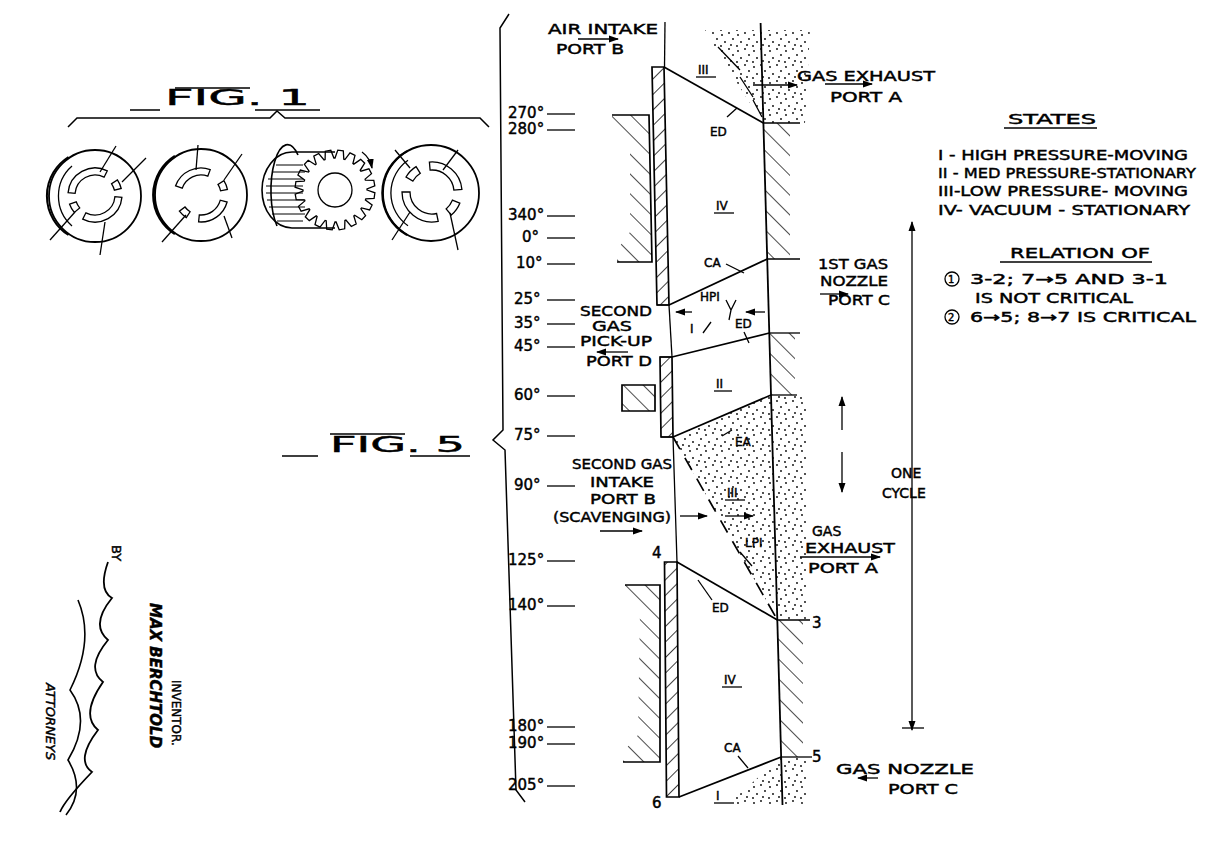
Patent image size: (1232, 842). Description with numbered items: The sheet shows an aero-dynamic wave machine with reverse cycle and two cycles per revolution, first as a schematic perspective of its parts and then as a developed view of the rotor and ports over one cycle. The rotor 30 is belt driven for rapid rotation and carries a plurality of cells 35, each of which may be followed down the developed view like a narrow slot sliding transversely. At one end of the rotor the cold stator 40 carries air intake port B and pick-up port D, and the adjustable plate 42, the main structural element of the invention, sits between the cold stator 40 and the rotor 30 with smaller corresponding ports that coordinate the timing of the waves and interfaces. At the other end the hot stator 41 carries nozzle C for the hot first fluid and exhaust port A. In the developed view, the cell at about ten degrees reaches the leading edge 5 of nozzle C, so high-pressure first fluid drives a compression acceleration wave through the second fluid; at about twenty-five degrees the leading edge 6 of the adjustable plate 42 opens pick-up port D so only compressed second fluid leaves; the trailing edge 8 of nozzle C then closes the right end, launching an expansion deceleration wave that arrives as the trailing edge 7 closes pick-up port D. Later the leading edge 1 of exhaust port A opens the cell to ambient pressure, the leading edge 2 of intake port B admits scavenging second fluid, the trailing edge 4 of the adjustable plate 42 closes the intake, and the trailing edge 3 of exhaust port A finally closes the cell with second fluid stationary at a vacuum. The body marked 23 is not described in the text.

In FIG. 1, the cold stator 40 is at (83, 241).
In FIG. 5, the cold stator 40 is at (646, 173).
In FIG. 1, the adjustable plate 42 is at (198, 253).
In FIG. 5, the adjustable plate 42 is at (669, 108).
In FIG. 1, the rotor body 23 is at (296, 160).
In FIG. 1, the cells 35 is at (345, 158).
In FIG. 1, the rotor 30 is at (346, 230).
In FIG. 1, the hot stator 41 is at (431, 243).
In FIG. 5, the hot stator 41 is at (842, 444).
In FIG. 5, the leading edge of exhaust port A 1 is at (790, 395).
In FIG. 5, the leading edge of intake port B 2 is at (665, 446).
In FIG. 5, the trailing edge of exhaust port A 3 is at (788, 126).
In FIG. 5, the trailing edge of intake port B 4 is at (655, 45).
In FIG. 5, the leading edge of nozzle C 5 is at (789, 258).
In FIG. 5, the leading edge of pick-up port D 6 is at (660, 314).
In FIG. 5, the trailing edge of pick-up port D 7 is at (662, 350).
In FIG. 5, the trailing edge of nozzle C 8 is at (790, 333).